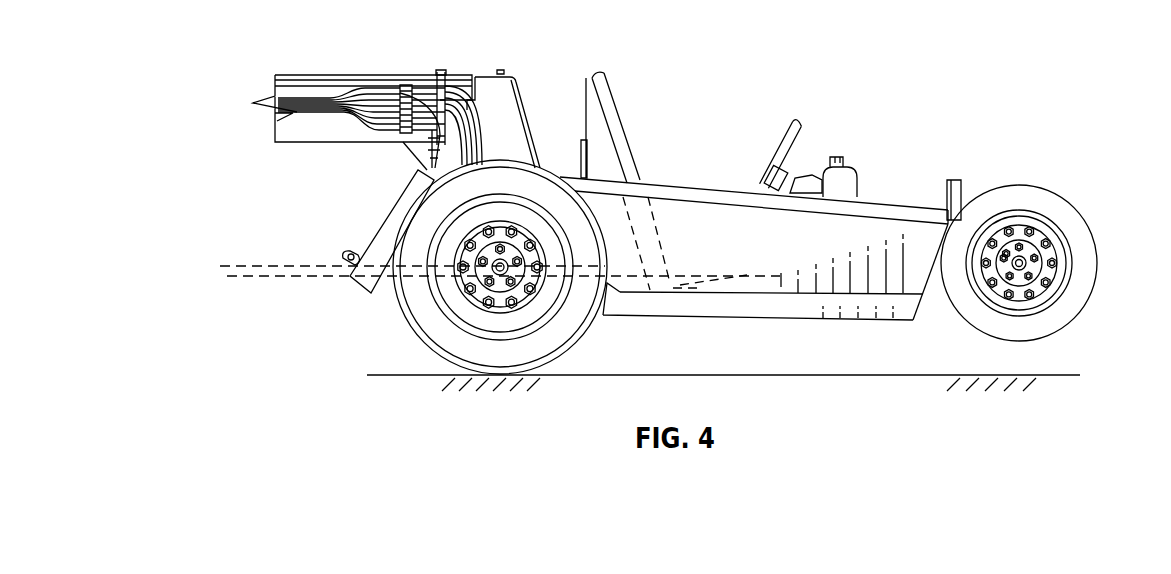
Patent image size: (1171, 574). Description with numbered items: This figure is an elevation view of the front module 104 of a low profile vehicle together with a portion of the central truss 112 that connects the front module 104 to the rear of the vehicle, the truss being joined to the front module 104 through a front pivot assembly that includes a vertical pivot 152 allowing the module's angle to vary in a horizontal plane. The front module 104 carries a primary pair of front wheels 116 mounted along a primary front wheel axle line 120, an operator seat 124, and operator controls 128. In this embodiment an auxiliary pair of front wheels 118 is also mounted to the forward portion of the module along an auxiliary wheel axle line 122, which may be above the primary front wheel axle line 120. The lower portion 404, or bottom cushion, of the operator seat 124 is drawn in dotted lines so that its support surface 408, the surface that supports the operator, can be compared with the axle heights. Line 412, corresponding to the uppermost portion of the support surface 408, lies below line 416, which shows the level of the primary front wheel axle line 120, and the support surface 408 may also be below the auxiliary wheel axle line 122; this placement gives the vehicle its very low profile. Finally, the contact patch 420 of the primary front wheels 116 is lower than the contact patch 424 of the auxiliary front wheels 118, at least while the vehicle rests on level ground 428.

The front module 104 is at (908, 202).
The central truss 112 is at (333, 78).
The primary front wheels 116 is at (423, 218).
The auxiliary front wheels 118 is at (1029, 200).
The primary front wheel axle line 120 is at (493, 268).
The auxiliary wheel axle line 122 is at (1030, 265).
The operator seat 124 is at (596, 72).
The operator controls 128 is at (797, 121).
The vertical pivot 152 is at (447, 73).
The lower portion 404 is at (687, 287).
The support surface 408 is at (743, 273).
The line corresponding to uppermost portion of the support surface 412 is at (233, 276).
The line showing primary front wheel axle line 416 is at (242, 265).
The contact patch 420 is at (480, 377).
The contact patch 424 is at (1018, 342).
The level ground 428 is at (1060, 376).